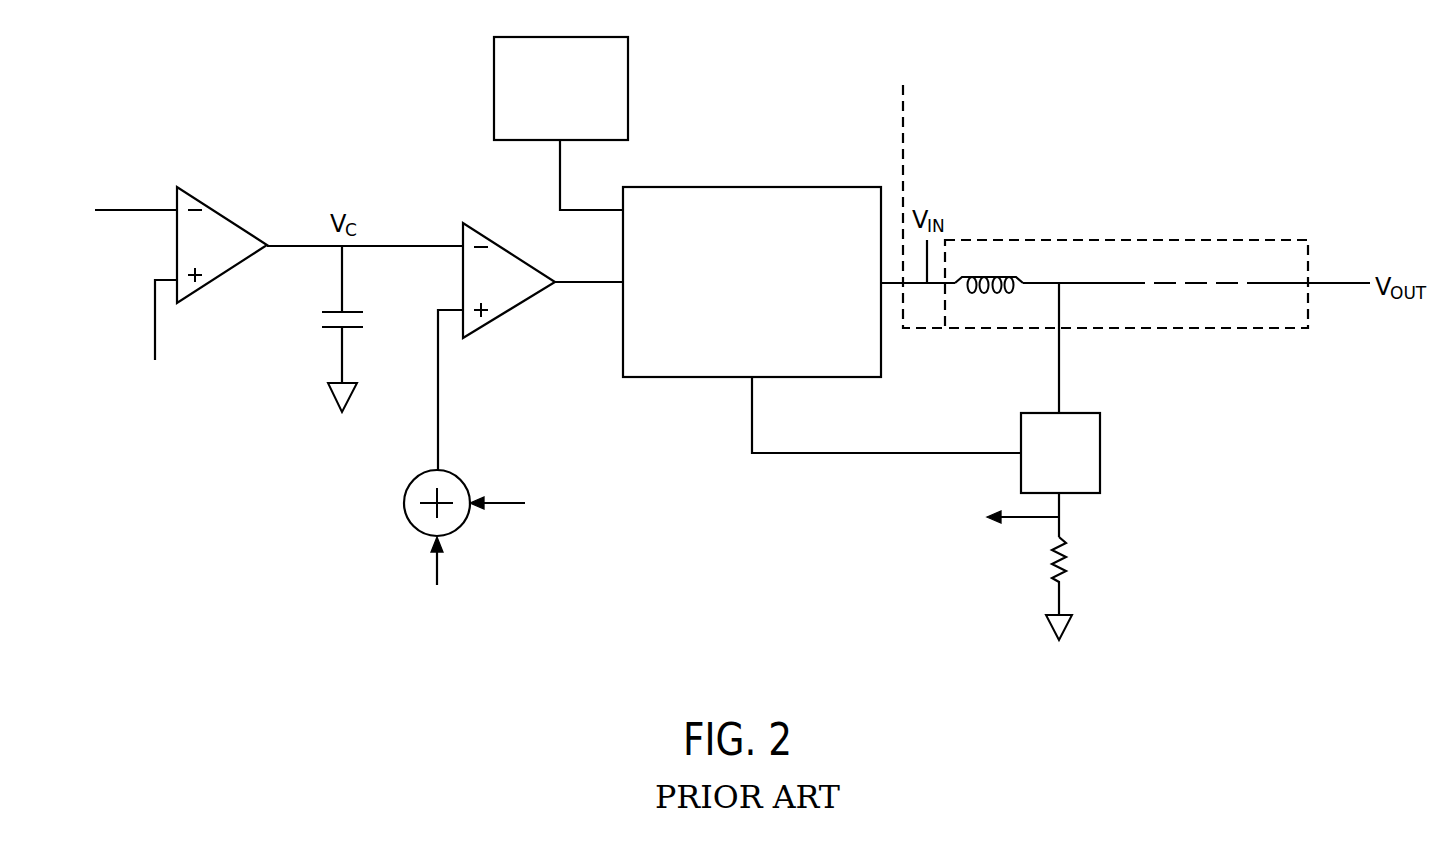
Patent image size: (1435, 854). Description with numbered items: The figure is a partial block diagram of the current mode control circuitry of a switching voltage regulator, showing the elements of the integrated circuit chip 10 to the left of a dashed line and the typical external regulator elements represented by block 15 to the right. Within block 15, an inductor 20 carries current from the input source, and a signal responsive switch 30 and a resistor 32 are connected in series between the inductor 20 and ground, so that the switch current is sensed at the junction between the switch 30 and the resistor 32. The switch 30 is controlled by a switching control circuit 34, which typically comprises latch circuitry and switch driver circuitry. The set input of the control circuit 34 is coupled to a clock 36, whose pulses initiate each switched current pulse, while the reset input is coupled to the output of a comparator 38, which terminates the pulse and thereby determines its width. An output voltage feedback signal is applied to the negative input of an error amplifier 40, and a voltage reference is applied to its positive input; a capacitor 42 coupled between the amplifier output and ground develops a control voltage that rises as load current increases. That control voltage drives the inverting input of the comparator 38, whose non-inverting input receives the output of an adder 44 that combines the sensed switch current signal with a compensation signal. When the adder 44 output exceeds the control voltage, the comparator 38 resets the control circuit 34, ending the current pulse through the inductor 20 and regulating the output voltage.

The integrated circuit chip 10 is at (791, 138).
The block of external regulator elements 15 is at (1221, 278).
The inductor 20 is at (993, 275).
The signal responsive switch 30 is at (1100, 452).
The resistor 32 is at (1050, 563).
The switching control circuit 34 is at (881, 365).
The clock 36 is at (630, 57).
The comparator 38 is at (478, 230).
The error amplifier 40 is at (193, 193).
The capacitor 42 is at (353, 312).
The adder 44 is at (402, 502).